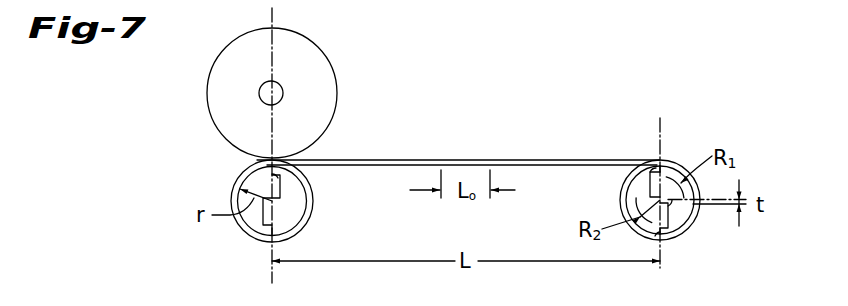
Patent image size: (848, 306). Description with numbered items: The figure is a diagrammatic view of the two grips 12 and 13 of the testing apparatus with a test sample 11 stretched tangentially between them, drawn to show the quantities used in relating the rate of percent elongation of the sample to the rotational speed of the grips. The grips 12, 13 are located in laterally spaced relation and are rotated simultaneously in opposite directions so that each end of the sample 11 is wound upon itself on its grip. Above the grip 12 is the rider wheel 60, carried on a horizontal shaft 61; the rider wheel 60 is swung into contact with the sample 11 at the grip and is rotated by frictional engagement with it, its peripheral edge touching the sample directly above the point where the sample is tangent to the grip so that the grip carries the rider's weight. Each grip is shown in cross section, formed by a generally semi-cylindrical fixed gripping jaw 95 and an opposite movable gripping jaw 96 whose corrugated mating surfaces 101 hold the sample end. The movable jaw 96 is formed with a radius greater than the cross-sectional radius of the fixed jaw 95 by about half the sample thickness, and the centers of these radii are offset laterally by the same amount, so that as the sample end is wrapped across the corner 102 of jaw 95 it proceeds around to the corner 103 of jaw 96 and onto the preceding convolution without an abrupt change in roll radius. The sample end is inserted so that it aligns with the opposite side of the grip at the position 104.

The test sample 11 is at (552, 159).
The grip 12 is at (297, 213).
The grip 13 is at (627, 200).
The rider wheel 60 is at (223, 67).
The horizontal shaft 61 is at (283, 90).
The gripping jaw 95 is at (636, 193).
The gripping jaw 96 is at (670, 177).
The mating surfaces 101 is at (666, 206).
The corner 102 is at (650, 172).
The corner 103 is at (665, 170).
The end alignment position 104 is at (662, 232).